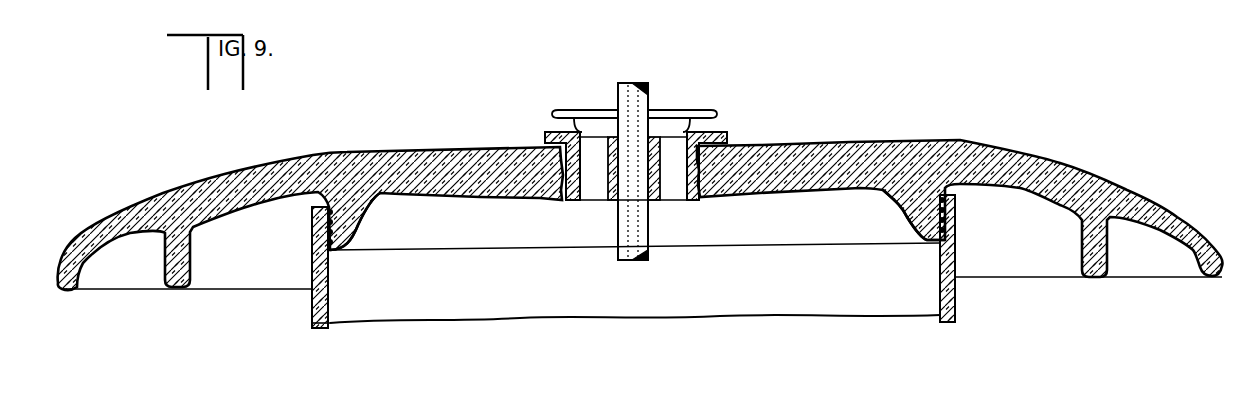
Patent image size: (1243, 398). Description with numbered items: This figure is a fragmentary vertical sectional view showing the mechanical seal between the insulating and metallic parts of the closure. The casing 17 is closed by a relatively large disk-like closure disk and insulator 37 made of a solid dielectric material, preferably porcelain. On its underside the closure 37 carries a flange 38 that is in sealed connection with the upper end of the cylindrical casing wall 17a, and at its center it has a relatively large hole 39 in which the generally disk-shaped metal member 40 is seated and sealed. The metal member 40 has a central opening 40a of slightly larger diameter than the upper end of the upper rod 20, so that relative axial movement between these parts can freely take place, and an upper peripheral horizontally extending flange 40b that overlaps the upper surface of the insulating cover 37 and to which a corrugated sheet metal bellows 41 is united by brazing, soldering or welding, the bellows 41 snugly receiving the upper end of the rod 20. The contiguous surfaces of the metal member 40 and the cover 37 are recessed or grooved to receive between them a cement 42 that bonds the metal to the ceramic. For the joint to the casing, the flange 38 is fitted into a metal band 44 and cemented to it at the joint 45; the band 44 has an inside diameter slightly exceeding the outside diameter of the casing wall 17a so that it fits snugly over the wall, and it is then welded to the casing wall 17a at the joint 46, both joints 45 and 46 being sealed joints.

The casing 17 is at (590, 318).
The cylindrical casing wall 17a is at (320, 322).
The upper rod 20 is at (632, 100).
The closure disk and insulator 37 is at (357, 150).
The flange 38 is at (355, 217).
The hole 39 is at (700, 170).
The metal member 40 is at (607, 208).
The central opening 40a is at (612, 157).
The upper peripheral flange 40b is at (725, 138).
The corrugated sheet metal bellows 41 is at (574, 116).
The cement 42 is at (698, 198).
The metal band 44 is at (313, 253).
The cemented joint 45 is at (312, 217).
The welded joint 46 is at (317, 298).